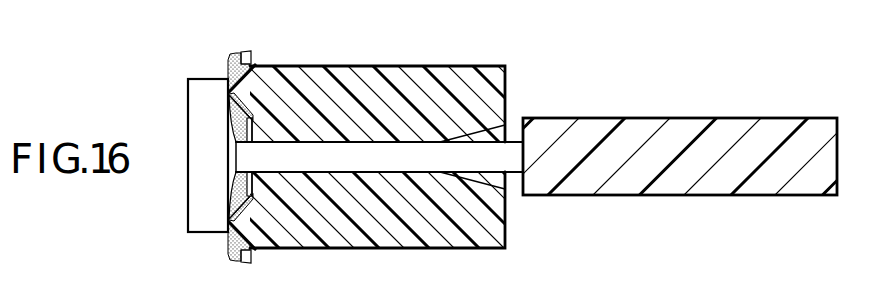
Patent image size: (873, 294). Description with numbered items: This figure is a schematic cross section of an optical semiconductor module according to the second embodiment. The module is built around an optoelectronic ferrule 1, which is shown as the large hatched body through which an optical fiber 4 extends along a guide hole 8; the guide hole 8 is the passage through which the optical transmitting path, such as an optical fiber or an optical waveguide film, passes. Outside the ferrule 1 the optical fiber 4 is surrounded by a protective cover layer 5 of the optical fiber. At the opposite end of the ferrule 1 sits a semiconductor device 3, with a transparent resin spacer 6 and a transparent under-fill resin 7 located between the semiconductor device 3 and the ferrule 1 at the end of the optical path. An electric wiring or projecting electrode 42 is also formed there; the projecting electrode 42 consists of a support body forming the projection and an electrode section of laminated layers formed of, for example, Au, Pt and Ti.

The optoelectronic ferrule 1 is at (347, 73).
The semiconductor device 3 is at (188, 115).
The optical fiber 4 is at (420, 154).
The protective cover layer 5 is at (690, 124).
The transparent resin spacer 6 is at (228, 186).
The transparent under-fill resin 7 is at (226, 256).
The guide hole 8 is at (500, 130).
The projecting electrode 42 is at (231, 62).